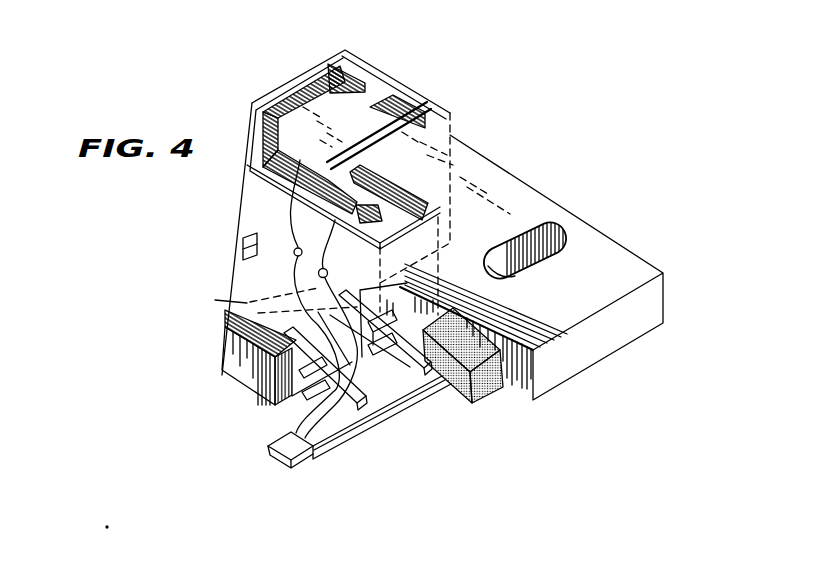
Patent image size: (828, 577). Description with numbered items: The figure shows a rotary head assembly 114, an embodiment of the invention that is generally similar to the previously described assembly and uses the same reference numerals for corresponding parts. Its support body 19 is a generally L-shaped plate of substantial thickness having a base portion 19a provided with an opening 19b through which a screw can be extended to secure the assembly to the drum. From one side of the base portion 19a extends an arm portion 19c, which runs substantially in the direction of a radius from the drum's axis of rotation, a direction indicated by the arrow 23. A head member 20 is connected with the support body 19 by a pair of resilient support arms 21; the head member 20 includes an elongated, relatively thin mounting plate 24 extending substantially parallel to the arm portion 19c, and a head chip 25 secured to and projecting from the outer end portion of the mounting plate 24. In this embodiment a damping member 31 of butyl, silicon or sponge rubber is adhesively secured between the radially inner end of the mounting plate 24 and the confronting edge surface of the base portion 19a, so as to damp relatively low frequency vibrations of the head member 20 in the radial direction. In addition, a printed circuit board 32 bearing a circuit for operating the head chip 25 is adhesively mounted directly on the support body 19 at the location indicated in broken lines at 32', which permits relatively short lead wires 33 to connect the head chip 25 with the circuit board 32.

The rotary head assembly 114 is at (612, 224).
The support body 19 is at (506, 170).
The base portion 19a is at (625, 280).
The opening 19b is at (546, 228).
The arm portion 19c is at (225, 311).
The head member 20 is at (385, 423).
The resilient support arms 21 is at (310, 409).
The arrow 23 is at (143, 447).
The mounting plate 24 is at (407, 392).
The head chip 25 is at (270, 447).
The damping member 31 is at (500, 388).
The printed circuit board 32 is at (348, 147).
The location of circuit board 32' is at (208, 244).
The lead wires 33 is at (282, 214).